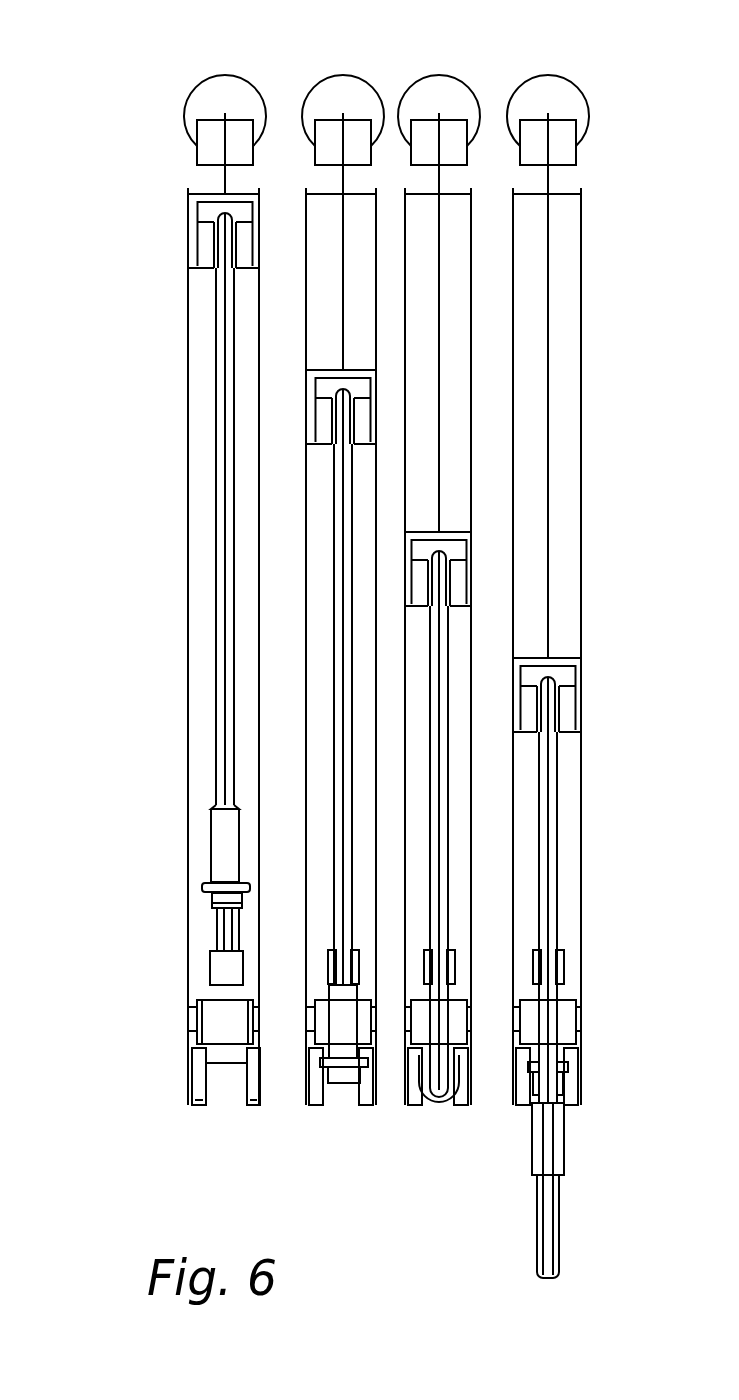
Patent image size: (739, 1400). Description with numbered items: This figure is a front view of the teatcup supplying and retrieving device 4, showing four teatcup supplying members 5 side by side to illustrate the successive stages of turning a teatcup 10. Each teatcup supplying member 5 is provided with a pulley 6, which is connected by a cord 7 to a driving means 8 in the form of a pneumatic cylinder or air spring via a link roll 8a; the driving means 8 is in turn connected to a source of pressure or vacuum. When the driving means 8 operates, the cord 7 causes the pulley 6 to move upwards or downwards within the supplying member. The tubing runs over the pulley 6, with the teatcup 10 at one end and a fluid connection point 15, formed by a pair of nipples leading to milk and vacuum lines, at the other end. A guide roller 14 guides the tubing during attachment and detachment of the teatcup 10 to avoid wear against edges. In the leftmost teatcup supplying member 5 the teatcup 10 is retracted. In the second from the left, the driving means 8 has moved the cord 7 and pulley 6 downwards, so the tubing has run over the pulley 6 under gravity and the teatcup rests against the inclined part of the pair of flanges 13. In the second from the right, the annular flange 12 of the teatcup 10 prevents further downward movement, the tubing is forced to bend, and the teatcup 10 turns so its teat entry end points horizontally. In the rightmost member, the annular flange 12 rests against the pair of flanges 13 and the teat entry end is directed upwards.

The teatcup supplying and retrieving device 4 is at (135, 463).
The teatcup supplying member 5 is at (188, 707).
The pulley 6 is at (188, 251).
The cord 7 is at (343, 312).
The driving means 8 is at (238, 86).
The link roll 8a is at (577, 151).
The teatcup 10 is at (220, 827).
The annular flange 12 is at (203, 886).
The pair of flanges 13 is at (188, 1078).
The guide roller 14 is at (203, 1010).
The fluid connection point 15 is at (211, 965).